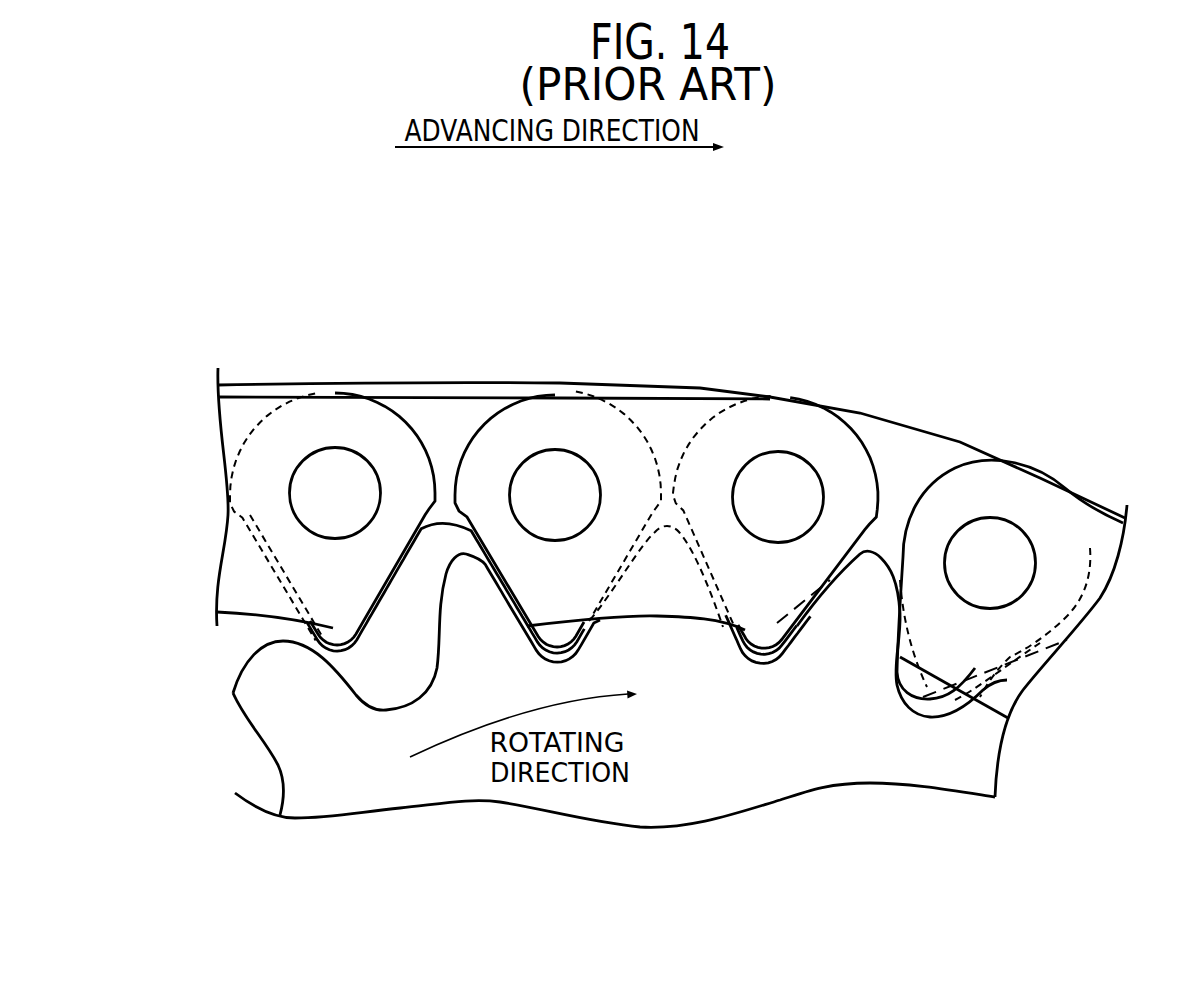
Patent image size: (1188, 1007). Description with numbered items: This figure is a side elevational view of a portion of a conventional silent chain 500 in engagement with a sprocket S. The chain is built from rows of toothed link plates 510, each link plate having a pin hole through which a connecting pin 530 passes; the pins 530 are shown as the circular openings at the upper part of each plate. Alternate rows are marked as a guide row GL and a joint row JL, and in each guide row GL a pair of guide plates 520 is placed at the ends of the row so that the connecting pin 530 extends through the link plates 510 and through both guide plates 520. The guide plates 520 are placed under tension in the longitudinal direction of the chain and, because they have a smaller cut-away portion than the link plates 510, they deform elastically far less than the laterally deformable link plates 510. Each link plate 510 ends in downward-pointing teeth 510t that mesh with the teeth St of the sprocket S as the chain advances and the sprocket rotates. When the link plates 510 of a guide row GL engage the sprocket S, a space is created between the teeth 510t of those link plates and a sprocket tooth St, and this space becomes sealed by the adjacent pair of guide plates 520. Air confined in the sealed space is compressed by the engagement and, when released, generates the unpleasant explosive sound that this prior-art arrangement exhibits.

The silent chain 500 is at (968, 196).
The toothed link plate 510 is at (242, 390).
The tooth of the link plate 510t is at (780, 640).
The guide plate 520 is at (660, 428).
The connecting pin 530 is at (334, 472).
The sprocket tooth St is at (265, 689).
The sprocket S is at (868, 763).
The guide row GL is at (260, 283).
The joint row JL is at (443, 283).